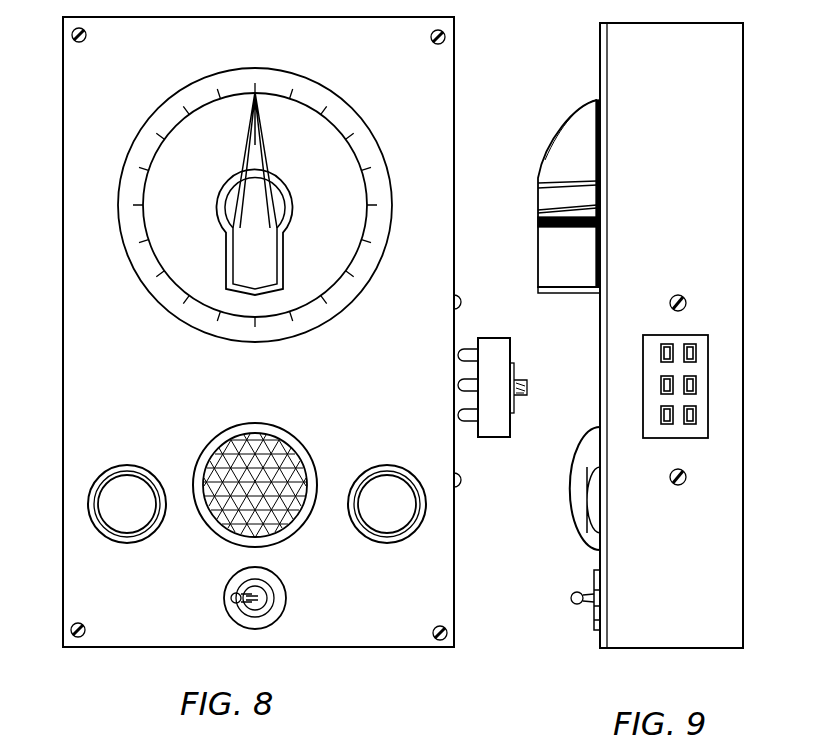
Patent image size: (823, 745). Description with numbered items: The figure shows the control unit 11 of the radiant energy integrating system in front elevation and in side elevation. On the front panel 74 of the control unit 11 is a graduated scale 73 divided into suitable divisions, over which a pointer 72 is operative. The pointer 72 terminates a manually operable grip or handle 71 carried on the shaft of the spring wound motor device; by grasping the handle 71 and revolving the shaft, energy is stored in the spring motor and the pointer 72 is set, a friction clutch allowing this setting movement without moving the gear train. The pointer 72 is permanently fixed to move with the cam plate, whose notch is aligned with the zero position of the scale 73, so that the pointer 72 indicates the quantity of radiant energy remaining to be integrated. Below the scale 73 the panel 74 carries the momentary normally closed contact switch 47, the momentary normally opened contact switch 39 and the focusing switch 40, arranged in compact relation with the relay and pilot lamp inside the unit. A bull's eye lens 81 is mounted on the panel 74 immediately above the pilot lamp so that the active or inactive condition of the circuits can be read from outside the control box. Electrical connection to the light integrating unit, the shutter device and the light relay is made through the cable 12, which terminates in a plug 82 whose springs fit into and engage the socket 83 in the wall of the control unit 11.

In FIG. 8, the control unit 11 is at (280, 332).
In FIG. 9, the control unit 11 is at (624, 337).
In FIG. 8, the cable 12 is at (534, 372).
In FIG. 8, the momentary normally opened contact switch 39 is at (387, 519).
In FIG. 9, the momentary normally opened contact switch 39 is at (617, 500).
In FIG. 8, the focusing switch 40 is at (269, 597).
In FIG. 9, the focusing switch 40 is at (574, 611).
In FIG. 8, the momentary normally closed contact switch 47 is at (127, 521).
In FIG. 8, the manually operable grip or handle 71 is at (246, 232).
In FIG. 9, the manually operable grip or handle 71 is at (554, 201).
In FIG. 8, the pointer 72 is at (244, 160).
In FIG. 9, the pointer 72 is at (569, 124).
In FIG. 8, the scale 73 is at (239, 205).
In FIG. 8, the front panel 74 is at (231, 332).
In FIG. 9, the front panel 74 is at (570, 300).
In FIG. 8, the bull's eye lens 81 is at (255, 473).
In FIG. 9, the bull's eye lens 81 is at (587, 488).
In FIG. 8, the plug 82 is at (506, 403).
In FIG. 9, the socket 83 is at (682, 371).